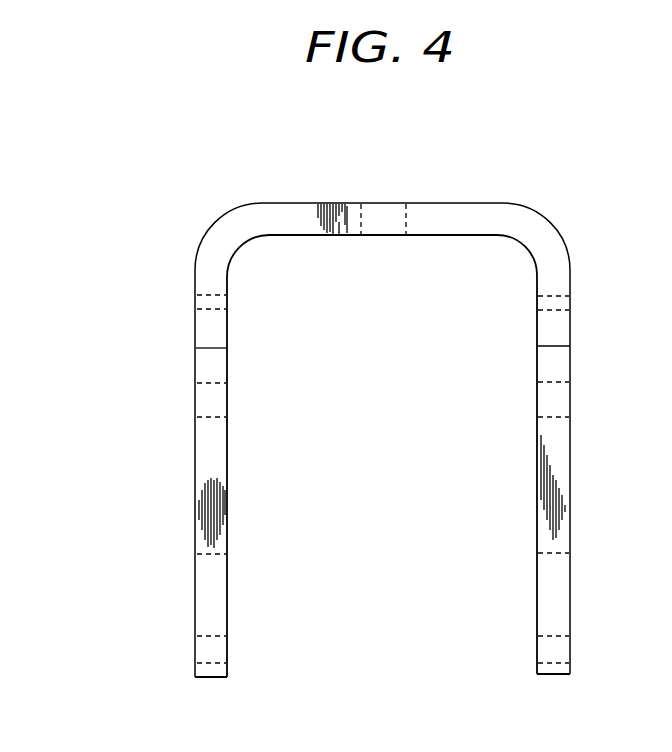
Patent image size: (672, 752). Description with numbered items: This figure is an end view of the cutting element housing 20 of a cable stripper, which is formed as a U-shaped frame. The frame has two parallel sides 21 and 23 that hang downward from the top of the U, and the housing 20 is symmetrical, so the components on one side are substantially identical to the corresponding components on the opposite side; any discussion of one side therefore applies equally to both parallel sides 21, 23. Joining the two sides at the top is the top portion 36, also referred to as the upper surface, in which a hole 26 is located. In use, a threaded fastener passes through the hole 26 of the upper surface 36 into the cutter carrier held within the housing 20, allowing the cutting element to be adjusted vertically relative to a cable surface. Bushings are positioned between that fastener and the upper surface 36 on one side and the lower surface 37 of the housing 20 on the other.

The cutting element housing 20 is at (371, 407).
The parallel side 21 is at (208, 470).
The parallel side 23 is at (562, 488).
The hole 26 is at (390, 203).
The top portion 36 is at (304, 203).
The lower surface 37 is at (436, 226).